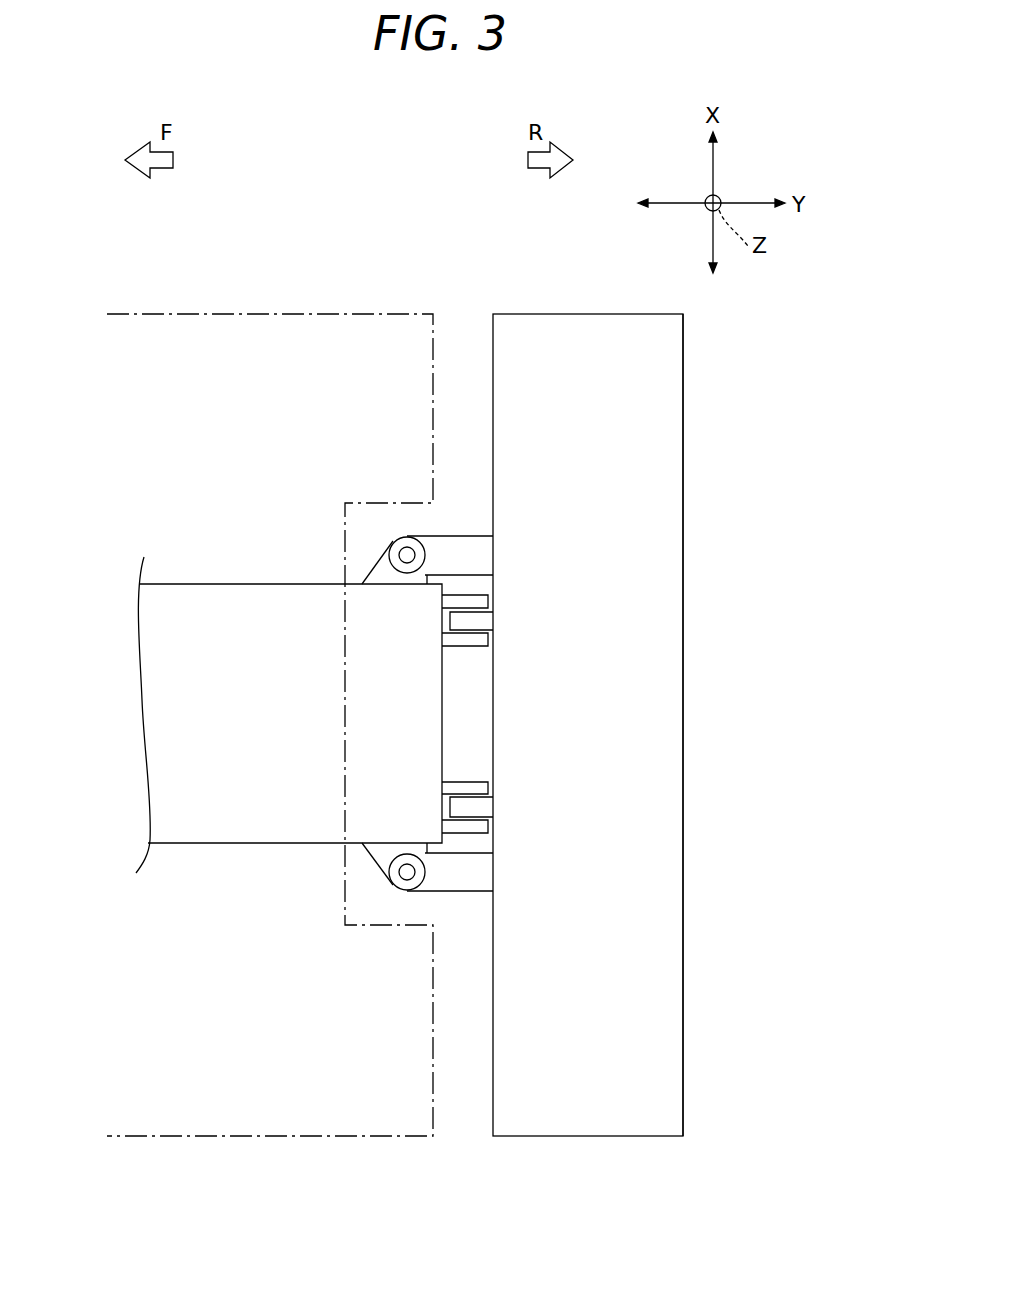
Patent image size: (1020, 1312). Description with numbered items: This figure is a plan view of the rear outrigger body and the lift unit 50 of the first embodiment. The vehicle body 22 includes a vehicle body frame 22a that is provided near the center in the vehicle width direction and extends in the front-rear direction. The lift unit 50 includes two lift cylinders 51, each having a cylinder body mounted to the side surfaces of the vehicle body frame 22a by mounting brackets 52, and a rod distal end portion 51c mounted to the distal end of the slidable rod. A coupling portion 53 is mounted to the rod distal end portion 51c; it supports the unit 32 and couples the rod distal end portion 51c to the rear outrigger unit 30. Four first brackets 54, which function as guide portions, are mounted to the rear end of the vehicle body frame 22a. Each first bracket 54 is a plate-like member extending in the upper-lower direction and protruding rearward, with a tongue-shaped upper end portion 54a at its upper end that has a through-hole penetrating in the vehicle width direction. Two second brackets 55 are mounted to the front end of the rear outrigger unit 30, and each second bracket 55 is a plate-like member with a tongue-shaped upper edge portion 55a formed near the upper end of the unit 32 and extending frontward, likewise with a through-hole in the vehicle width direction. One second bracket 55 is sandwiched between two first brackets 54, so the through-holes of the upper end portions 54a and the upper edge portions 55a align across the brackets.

The vehicle body 22 is at (253, 307).
The vehicle body frame 22a is at (243, 843).
The rear outrigger unit 30 is at (686, 468).
The unit 32 is at (683, 803).
The lift unit 50 is at (450, 1024).
The lift cylinder 51 is at (428, 726).
The rod distal end portion 51c is at (421, 538).
The mounting bracket 52 is at (373, 578).
The coupling portion 53 is at (481, 550).
The first bracket 54 is at (539, 721).
The upper end portion 54a is at (488, 600).
The second bracket 55 is at (543, 716).
The upper edge portion 55a is at (483, 621).